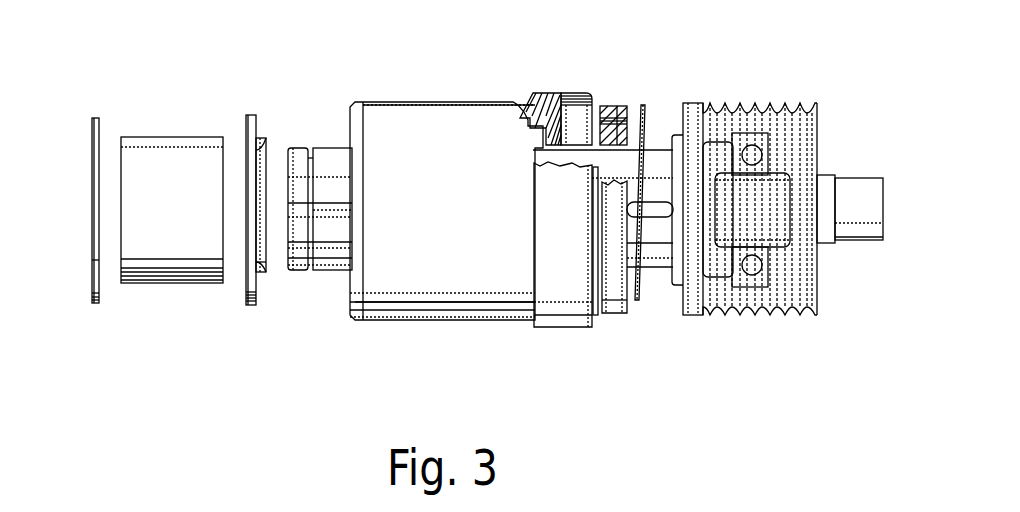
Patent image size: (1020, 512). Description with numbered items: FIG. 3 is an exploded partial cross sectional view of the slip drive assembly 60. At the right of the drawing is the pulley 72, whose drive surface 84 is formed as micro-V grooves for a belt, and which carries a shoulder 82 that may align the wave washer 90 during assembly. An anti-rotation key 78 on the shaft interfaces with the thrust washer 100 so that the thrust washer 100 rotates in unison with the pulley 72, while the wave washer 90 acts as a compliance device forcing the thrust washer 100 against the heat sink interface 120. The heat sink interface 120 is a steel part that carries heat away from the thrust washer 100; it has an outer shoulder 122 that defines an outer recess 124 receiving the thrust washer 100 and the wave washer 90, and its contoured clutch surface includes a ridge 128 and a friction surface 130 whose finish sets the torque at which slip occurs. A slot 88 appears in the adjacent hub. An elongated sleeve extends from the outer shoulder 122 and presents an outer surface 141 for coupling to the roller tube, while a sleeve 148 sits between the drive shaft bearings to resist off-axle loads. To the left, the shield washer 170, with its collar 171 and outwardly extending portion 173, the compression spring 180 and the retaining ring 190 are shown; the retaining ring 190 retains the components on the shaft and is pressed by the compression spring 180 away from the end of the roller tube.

The slip drive assembly 60 is at (604, 372).
The pulley 72 is at (777, 215).
The anti-rotation key 78 is at (333, 208).
The shoulder 82 is at (677, 135).
The drive surface 84 is at (755, 310).
The slot 88 is at (310, 163).
The wave washer 90 is at (635, 213).
The thrust washer 100 is at (608, 107).
The heat sink interface 120 is at (446, 215).
The outer shoulder 122 is at (558, 282).
The outer recess 124 is at (557, 100).
The ridge 128 is at (560, 134).
The friction surface 130 is at (600, 105).
The outer surface 141 is at (418, 277).
The sleeve 148 is at (462, 253).
The shield washer 170 is at (247, 186).
The collar 171 is at (265, 275).
The outwardly extending portion 173 is at (248, 298).
The compression spring 180 is at (177, 137).
The retaining ring 190 is at (92, 117).